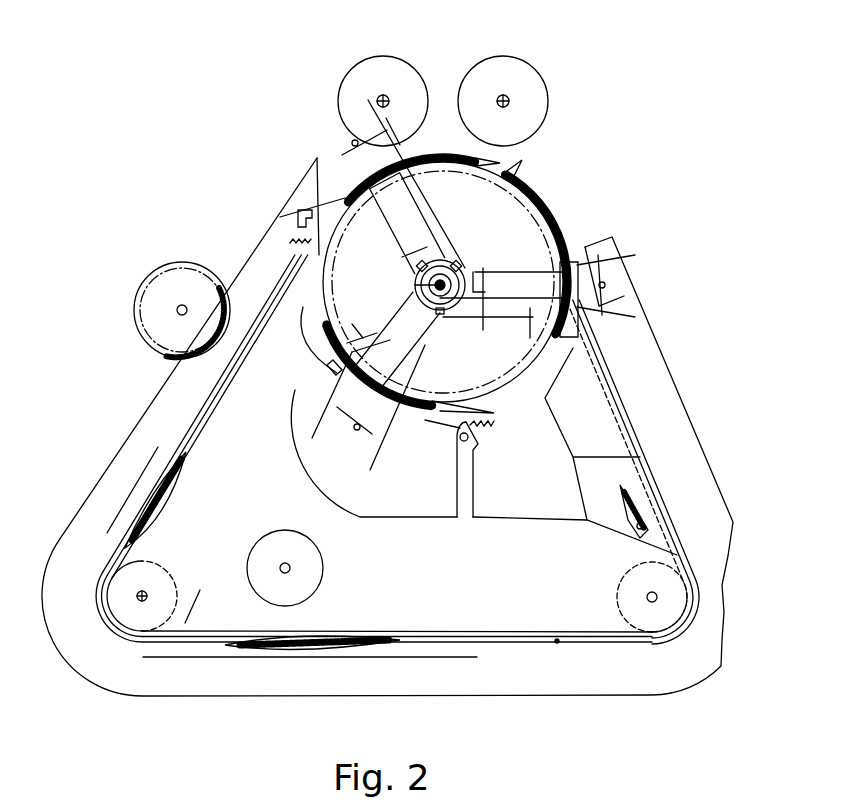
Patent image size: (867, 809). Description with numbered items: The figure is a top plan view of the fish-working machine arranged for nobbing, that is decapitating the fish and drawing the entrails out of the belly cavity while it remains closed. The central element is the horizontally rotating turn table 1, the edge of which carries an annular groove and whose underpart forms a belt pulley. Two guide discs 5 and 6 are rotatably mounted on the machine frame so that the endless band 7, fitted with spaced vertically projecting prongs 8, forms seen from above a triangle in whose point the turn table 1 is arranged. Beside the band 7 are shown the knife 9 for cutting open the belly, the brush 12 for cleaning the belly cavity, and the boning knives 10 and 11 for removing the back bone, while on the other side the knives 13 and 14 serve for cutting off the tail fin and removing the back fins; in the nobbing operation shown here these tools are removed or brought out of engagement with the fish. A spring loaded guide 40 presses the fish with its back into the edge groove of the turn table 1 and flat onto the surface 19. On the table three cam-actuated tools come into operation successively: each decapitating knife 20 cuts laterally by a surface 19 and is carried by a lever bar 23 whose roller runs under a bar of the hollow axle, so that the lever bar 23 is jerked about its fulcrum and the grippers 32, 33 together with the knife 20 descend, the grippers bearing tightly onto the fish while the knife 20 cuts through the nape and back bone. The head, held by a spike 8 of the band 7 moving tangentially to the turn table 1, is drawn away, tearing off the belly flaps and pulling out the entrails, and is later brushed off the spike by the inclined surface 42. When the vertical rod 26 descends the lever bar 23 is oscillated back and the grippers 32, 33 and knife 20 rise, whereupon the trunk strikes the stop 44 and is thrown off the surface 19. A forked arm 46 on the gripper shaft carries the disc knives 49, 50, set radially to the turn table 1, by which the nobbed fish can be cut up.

The turn table 1 is at (480, 190).
The guide disc 5 is at (628, 572).
The guide disc 6 is at (158, 567).
The endless band 7 is at (210, 423).
The prongs 8 is at (248, 645).
The knife 9 is at (138, 488).
The knife 10 is at (386, 64).
The knife 11 is at (523, 69).
The brush 12 is at (190, 264).
The knife 13 is at (199, 598).
The knife 14 is at (318, 563).
The surface 19 is at (417, 153).
The decapitating knife 20 is at (340, 358).
The lever bar 23 is at (437, 223).
The vertical rod 26 is at (449, 276).
The gripper 32 is at (530, 317).
The gripper 33 is at (530, 337).
The spring loaded guide 40 is at (325, 213).
The inclined surface 42 is at (657, 481).
The stop 44 is at (330, 368).
The forked arm 46 is at (393, 234).
The disc knife 49 is at (323, 146).
The disc knife 50 is at (318, 440).